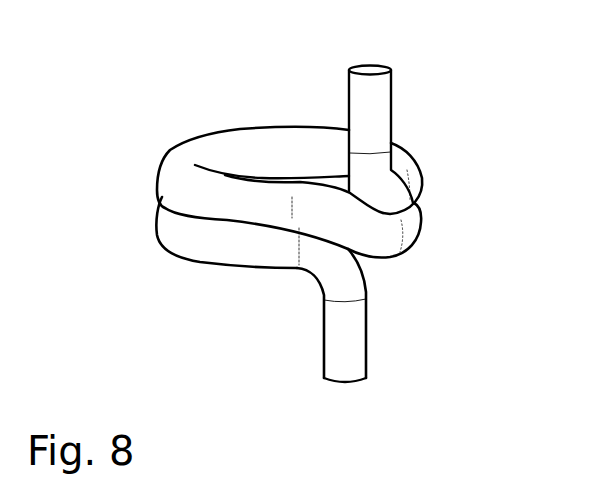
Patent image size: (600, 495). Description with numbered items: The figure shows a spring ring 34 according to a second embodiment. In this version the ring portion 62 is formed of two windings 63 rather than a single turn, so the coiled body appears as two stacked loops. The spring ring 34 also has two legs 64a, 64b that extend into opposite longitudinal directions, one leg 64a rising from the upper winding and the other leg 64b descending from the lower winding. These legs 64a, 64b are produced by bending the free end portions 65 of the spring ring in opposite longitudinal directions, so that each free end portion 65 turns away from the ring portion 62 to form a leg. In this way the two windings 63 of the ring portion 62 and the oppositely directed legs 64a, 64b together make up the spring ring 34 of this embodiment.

The spring ring 34 is at (310, 194).
The ring portion 62 is at (306, 213).
The windings 63 is at (175, 173).
The leg 64a is at (355, 93).
The leg 64b is at (348, 343).
The free end portions 65 is at (385, 89).